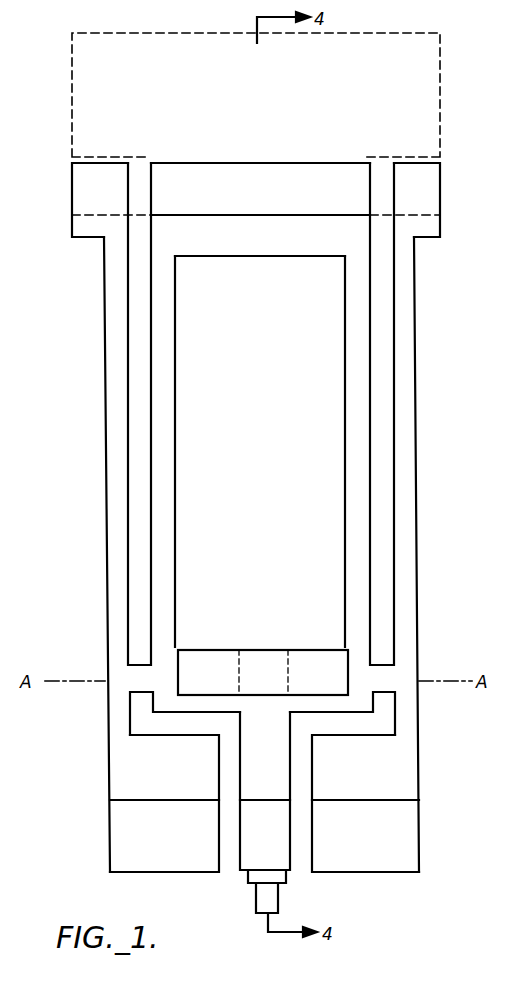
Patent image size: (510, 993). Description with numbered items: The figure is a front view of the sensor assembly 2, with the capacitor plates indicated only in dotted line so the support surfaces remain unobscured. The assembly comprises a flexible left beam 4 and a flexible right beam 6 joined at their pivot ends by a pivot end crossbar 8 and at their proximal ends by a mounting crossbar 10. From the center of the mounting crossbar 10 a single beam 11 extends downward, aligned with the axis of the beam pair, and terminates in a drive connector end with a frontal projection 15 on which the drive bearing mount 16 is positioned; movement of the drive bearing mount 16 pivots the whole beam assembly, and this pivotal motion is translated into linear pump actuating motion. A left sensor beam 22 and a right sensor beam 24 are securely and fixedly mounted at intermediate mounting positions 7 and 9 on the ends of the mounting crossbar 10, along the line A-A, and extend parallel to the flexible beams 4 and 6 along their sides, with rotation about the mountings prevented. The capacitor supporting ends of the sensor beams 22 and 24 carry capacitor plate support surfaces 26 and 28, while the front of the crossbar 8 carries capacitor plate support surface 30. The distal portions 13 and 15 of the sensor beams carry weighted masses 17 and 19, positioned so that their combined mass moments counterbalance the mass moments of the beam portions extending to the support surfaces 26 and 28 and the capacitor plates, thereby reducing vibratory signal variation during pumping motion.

The sensor assembly 2 is at (440, 362).
The flexible left beam 4 is at (178, 444).
The flexible right beam 6 is at (337, 486).
The intermediate mounting position 7 is at (389, 684).
The pivot end crossbar 8 is at (213, 257).
The intermediate mounting position 9 is at (134, 681).
The mounting crossbar 10 is at (212, 647).
The single beam 11 is at (240, 772).
The distal portion 13 is at (108, 772).
The distal portion / frontal projection 15 is at (420, 772).
The drive bearing mount 16 is at (265, 896).
The weighted mass 17 is at (108, 846).
The weighted mass 19 is at (420, 846).
The left sensor beam 22 is at (105, 526).
The right sensor beam 24 is at (418, 523).
The capacitor plate support surface 26 is at (95, 190).
The capacitor plate support surface 28 is at (415, 203).
The capacitor plate support surface 30 is at (269, 201).